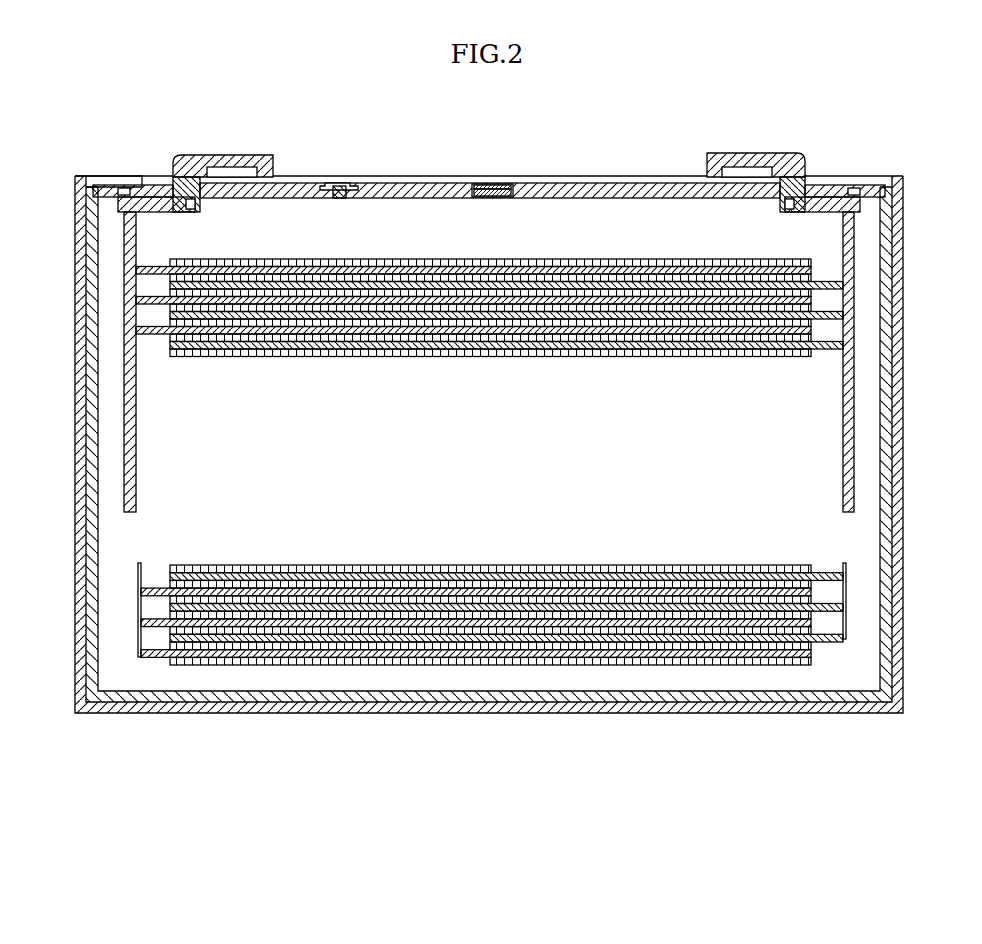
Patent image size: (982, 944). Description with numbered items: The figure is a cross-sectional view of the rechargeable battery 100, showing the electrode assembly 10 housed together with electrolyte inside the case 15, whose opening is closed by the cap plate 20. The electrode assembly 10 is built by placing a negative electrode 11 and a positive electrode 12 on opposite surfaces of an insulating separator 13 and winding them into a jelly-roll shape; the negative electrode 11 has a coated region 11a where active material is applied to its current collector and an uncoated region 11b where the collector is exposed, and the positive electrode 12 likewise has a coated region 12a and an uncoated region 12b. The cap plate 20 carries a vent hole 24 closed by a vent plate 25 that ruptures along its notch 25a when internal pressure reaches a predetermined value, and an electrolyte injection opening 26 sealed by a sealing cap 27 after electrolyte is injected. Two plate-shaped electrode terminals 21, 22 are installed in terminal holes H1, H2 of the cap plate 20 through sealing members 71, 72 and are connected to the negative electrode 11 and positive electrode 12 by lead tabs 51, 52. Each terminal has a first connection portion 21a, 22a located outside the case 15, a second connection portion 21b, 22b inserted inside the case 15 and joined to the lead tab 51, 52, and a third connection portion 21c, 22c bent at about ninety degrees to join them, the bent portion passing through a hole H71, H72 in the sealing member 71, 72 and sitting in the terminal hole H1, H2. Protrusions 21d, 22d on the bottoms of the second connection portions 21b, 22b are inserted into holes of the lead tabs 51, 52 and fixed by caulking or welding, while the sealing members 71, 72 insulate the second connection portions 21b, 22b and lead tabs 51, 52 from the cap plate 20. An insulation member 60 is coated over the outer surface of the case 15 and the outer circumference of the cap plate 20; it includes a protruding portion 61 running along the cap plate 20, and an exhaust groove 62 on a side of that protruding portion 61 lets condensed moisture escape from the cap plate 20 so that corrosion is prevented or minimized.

The rechargeable battery 100 is at (571, 98).
The electrode assembly 10 is at (605, 666).
The negative electrode 11 is at (130, 760).
The coated region 11a is at (255, 655).
The uncoated region 11b is at (143, 660).
The positive electrode 12 is at (705, 760).
The coated region 12a is at (718, 655).
The uncoated region 12b is at (843, 640).
The separator 13 is at (490, 627).
The case 15 is at (890, 360).
The cap plate 20 is at (592, 183).
The electrode terminal 21 is at (233, 115).
The first connection portion 21a is at (258, 163).
The second connection portion 21b is at (150, 188).
The third connection portion 21c is at (178, 192).
The protrusion 21d is at (140, 212).
The electrode terminal 22 is at (749, 115).
The first connection portion 22a is at (722, 163).
The second connection portion 22b is at (826, 185).
The third connection portion 22c is at (795, 185).
The protrusion 22d is at (835, 214).
The vent hole 24 is at (487, 198).
The vent plate 25 is at (506, 185).
The notch 25a is at (480, 186).
The electrolyte injection opening 26 is at (346, 183).
The sealing cap 27 is at (333, 183).
The lead tab 51 is at (124, 416).
The lead tab 52 is at (855, 434).
The insulation member 60 is at (900, 302).
The protruding portion 61 is at (650, 176).
The exhaust groove 62 is at (93, 182).
The sealing member 71 is at (202, 160).
The sealing member 72 is at (764, 160).
The terminal hole H1 is at (127, 183).
The terminal hole H2 is at (852, 190).
The hole H71 is at (184, 203).
The hole H72 is at (792, 203).